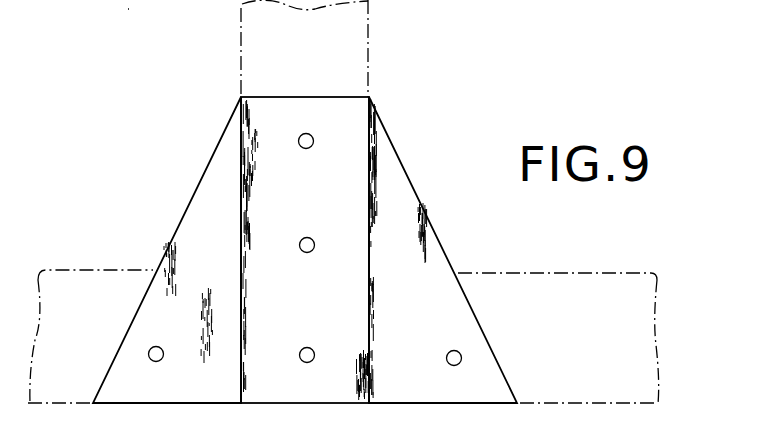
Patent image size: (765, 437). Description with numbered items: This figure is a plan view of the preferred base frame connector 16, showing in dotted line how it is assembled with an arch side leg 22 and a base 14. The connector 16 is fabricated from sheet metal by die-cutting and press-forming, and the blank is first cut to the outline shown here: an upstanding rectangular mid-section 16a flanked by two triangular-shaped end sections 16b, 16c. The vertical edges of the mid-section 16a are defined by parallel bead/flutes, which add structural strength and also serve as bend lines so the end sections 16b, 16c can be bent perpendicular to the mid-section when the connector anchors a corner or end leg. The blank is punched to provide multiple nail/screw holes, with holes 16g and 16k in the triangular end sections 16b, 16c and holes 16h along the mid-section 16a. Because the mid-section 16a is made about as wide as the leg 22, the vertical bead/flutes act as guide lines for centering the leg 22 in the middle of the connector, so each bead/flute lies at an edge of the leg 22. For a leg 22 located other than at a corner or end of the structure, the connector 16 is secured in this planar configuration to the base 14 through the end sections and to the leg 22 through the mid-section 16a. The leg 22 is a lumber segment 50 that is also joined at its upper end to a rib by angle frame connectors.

The base 14 is at (617, 263).
The base frame connector 16 is at (305, 224).
The mid-section 16a is at (321, 198).
The end section 16b is at (220, 262).
The end section 16c is at (429, 310).
The nail/screw hole 16g is at (163, 359).
The nail/screw holes 16h is at (306, 133).
The nail/screw hole 16k is at (447, 361).
The left side leg 22 is at (368, 52).
The lumber segment 50 is at (139, 6).